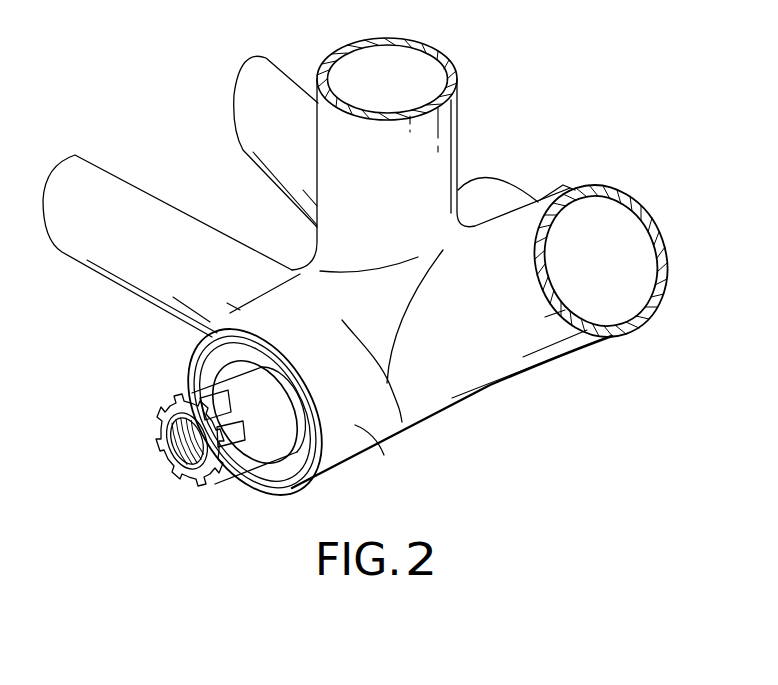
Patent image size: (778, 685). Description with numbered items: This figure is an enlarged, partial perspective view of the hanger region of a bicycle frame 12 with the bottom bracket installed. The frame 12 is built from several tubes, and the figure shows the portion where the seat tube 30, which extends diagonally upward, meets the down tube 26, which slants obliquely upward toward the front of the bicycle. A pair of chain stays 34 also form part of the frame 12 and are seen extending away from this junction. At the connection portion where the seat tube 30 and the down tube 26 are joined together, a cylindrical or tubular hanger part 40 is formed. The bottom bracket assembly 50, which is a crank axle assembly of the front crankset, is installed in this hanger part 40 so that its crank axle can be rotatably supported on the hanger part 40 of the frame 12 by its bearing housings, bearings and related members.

The frame 12 is at (468, 150).
The down tube 26 is at (553, 365).
The seat tube 30 is at (459, 120).
The chain stays 34 is at (233, 113).
The hanger part 40 is at (384, 455).
The bottom bracket assembly 50 is at (166, 365).